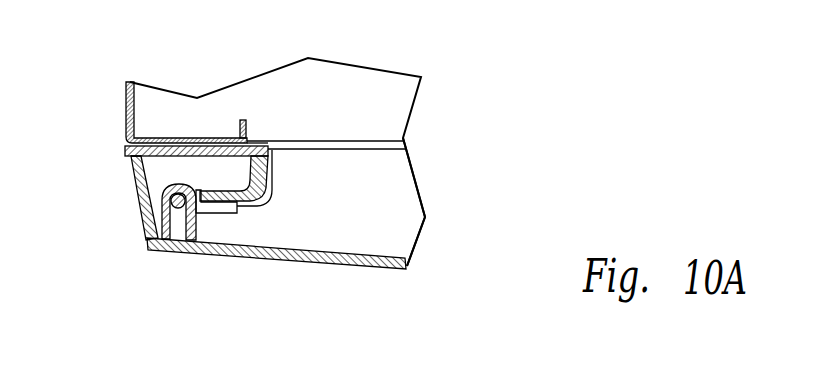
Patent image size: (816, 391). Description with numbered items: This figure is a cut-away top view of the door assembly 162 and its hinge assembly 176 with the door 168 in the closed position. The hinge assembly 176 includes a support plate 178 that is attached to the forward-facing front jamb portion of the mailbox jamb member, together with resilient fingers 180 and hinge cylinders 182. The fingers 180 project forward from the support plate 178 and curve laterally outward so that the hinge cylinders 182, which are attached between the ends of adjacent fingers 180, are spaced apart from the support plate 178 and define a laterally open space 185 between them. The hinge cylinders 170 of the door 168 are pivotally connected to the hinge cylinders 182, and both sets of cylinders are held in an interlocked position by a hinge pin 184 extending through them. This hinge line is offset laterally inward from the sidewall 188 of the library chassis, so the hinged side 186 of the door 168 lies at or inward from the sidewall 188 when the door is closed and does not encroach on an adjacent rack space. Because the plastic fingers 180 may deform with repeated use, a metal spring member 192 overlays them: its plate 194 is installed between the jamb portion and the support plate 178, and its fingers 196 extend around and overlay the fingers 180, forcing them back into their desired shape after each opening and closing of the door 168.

The door assembly 162 is at (494, 128).
The door 168 is at (395, 282).
The hinge cylinders 170 is at (128, 225).
The hinge assembly 176 is at (303, 203).
The support plate 178 is at (194, 172).
The fingers 180 is at (203, 146).
The hinge cylinders 182 is at (208, 214).
The hinge pin 184 is at (177, 252).
The laterally open space 185 is at (131, 180).
The hinged side 186 is at (162, 207).
The sidewall 188 is at (127, 122).
The spring member 192 is at (279, 163).
The plate 194 is at (266, 146).
The fingers 196 is at (282, 183).